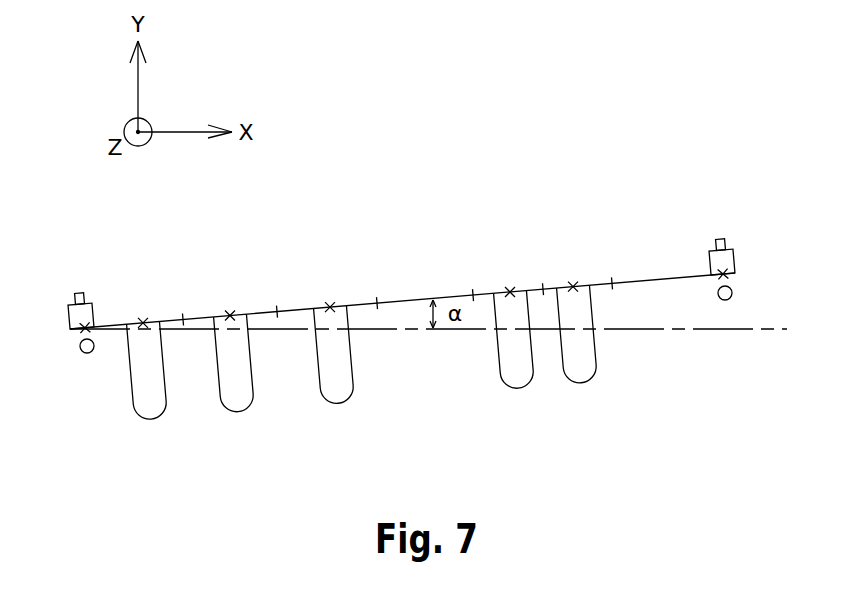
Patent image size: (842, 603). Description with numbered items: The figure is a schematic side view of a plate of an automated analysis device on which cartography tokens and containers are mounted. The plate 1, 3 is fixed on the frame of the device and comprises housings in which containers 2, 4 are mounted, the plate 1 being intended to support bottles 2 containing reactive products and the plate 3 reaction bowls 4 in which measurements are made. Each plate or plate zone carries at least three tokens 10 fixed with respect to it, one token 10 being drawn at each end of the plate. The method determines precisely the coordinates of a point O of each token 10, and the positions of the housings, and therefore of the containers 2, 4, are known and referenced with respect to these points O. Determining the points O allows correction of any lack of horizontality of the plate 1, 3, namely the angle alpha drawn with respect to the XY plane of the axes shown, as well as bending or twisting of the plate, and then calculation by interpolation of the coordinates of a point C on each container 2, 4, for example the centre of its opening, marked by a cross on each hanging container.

The plate 1 is at (402, 248).
The plate 3 is at (670, 277).
The bottles 2 is at (362, 376).
The reaction bowls 4 is at (335, 377).
The token 10 is at (54, 301).